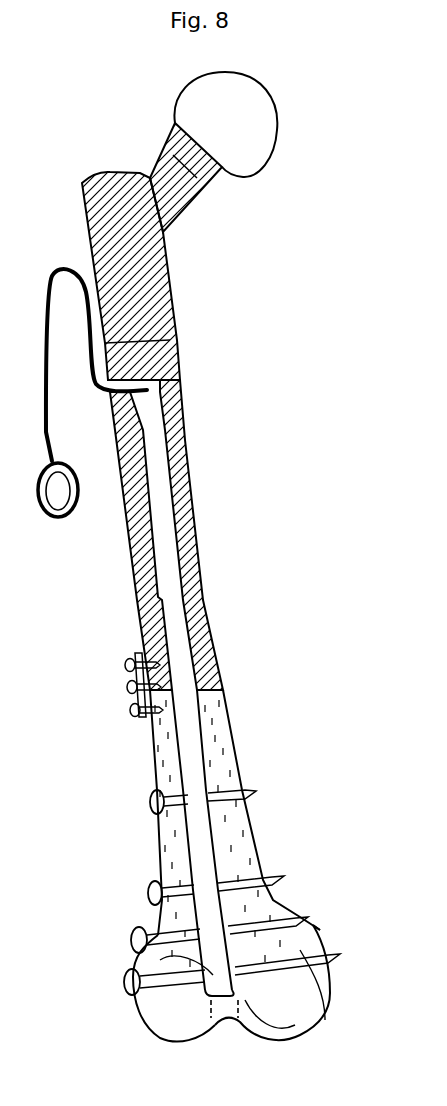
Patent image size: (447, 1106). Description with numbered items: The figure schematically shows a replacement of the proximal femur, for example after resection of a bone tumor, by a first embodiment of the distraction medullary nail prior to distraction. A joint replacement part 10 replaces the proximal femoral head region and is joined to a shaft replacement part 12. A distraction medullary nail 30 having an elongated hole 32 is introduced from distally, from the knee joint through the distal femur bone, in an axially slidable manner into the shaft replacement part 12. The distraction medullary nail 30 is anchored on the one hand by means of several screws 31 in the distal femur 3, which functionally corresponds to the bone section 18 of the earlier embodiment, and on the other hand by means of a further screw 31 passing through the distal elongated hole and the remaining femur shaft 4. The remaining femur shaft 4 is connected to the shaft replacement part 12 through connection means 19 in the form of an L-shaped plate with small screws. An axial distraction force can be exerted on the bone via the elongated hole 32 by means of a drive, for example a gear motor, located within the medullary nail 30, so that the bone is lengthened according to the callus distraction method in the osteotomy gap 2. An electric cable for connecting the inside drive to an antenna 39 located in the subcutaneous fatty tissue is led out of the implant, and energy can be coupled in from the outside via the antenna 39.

The joint replacement part 10 is at (132, 297).
The shaft replacement part 12 is at (190, 518).
The antenna 39 is at (58, 492).
The connection means 19 is at (128, 679).
The remaining femur shaft 4 is at (165, 760).
The elongated hole 32 is at (207, 745).
The osteotomy gap 2 is at (163, 843).
The distal femur 3 is at (182, 974).
The bone section 18 is at (175, 908).
The distraction medullary nail 30 is at (205, 852).
The screws 31 is at (243, 787).